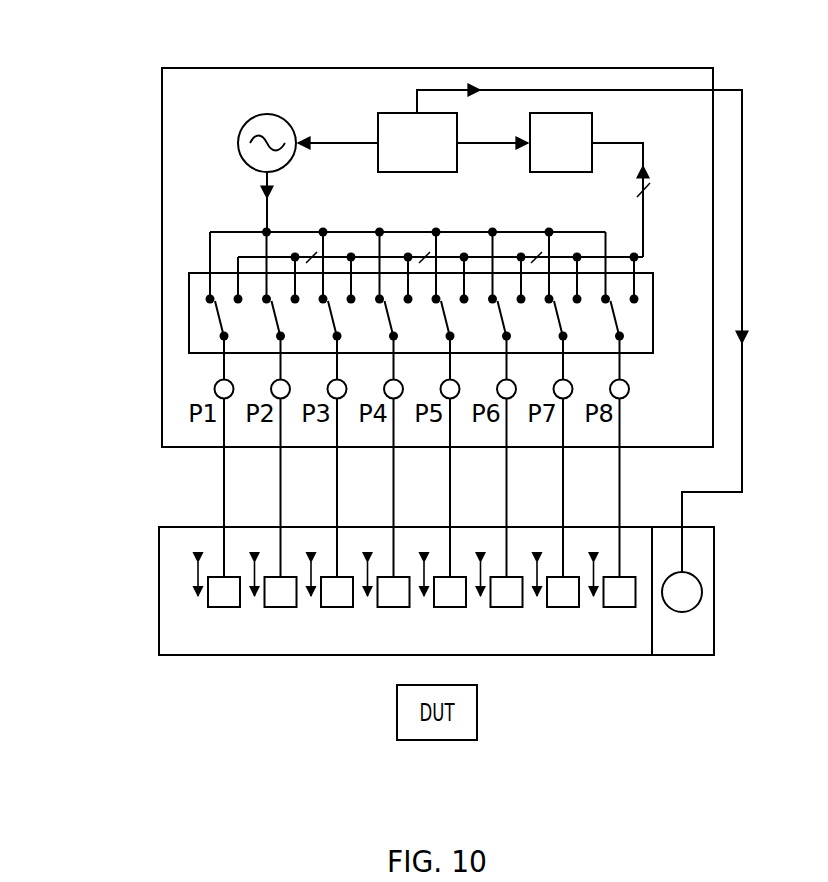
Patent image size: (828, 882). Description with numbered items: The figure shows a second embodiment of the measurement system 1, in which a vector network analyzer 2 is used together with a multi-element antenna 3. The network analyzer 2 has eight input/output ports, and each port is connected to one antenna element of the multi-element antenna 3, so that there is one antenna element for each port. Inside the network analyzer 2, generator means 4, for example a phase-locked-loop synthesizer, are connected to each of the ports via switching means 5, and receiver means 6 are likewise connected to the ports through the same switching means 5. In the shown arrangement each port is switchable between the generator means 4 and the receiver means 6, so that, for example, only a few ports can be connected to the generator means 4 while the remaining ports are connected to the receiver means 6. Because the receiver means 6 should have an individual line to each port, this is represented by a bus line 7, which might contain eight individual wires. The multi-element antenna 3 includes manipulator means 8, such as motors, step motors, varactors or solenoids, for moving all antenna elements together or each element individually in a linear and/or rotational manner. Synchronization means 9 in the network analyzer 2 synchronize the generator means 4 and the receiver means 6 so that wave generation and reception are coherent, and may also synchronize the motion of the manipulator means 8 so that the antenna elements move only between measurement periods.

The system 1 is at (92, 132).
The vector network analyzer 2 is at (183, 80).
The multi-element antenna 3 is at (592, 656).
The generator means 4 is at (246, 157).
The switching means 5 is at (189, 304).
The receiver means 6 is at (583, 128).
The bus line 7 is at (645, 228).
The manipulator means 8 is at (683, 656).
The synchronization means 9 is at (388, 112).